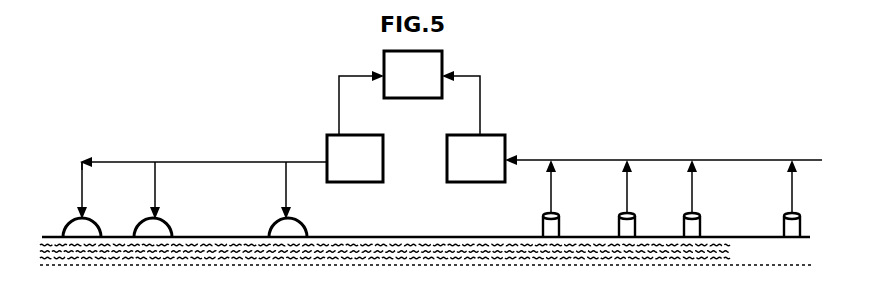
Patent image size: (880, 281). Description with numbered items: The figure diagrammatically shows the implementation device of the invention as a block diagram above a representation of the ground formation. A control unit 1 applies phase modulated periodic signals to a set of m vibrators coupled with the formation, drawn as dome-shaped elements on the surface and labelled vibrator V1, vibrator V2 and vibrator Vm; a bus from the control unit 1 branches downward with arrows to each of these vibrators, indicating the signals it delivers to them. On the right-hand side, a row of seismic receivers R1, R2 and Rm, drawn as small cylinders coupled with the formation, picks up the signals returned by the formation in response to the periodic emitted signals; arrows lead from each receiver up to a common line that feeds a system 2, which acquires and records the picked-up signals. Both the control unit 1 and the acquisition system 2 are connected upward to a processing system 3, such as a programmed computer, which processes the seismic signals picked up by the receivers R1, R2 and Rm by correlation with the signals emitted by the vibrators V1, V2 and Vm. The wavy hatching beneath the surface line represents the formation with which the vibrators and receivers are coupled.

The control unit 1 is at (347, 174).
The system 2 is at (468, 174).
The processing system 3 is at (405, 87).
The vibrator V1 is at (69, 199).
The vibrator V2 is at (142, 199).
The vibrator Vm is at (302, 199).
The seismic receiver R1 is at (535, 198).
The seismic receiver R2 is at (611, 198).
The seismic receiver Rm is at (814, 198).